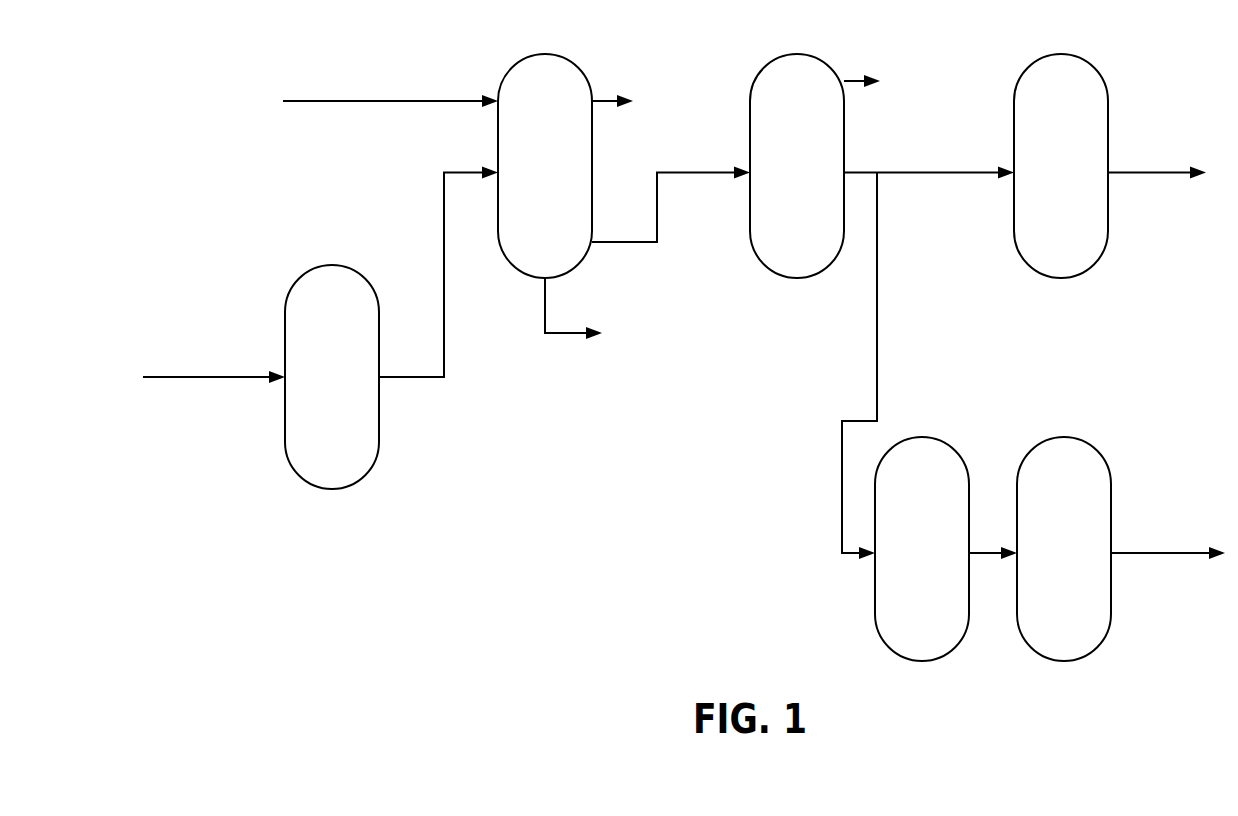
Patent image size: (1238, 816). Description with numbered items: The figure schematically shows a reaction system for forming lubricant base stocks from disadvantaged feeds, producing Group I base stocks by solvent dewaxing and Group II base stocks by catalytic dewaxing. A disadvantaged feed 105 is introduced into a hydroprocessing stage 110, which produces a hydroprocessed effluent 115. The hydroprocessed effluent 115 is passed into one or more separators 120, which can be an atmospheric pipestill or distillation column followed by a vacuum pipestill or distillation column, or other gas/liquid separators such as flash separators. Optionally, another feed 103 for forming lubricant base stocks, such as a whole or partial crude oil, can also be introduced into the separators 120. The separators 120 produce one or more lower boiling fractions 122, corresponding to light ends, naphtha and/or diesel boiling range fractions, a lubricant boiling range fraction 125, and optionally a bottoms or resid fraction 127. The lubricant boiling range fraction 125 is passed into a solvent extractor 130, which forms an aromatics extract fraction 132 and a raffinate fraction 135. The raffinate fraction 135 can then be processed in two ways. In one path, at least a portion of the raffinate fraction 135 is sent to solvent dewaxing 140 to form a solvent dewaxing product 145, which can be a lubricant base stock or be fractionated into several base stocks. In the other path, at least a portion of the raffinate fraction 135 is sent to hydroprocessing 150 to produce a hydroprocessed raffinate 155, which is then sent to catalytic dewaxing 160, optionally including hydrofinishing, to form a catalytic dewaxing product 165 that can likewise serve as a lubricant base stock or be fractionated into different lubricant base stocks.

The another feed 103 is at (392, 100).
The disadvantaged feed 105 is at (210, 376).
The hydroprocessing stage 110 is at (313, 394).
The hydroprocessed effluent 115 is at (444, 203).
The separators 120 is at (526, 183).
The lower boiling fractions 122 is at (610, 97).
The lubricant boiling range fraction 125 is at (623, 242).
The bottoms or resid fraction 127 is at (572, 337).
The solvent extractor 130 is at (778, 183).
The aromatics extract fraction 132 is at (857, 78).
The raffinate fraction 135 is at (943, 170).
The solvent dewaxing 140 is at (1042, 183).
The solvent dewaxing product 145 is at (1143, 170).
The hydroprocessing 150 is at (903, 564).
The hydroprocessed raffinate 155 is at (985, 552).
The catalytic dewaxing 160 is at (1045, 564).
The catalytic dewaxing product 165 is at (1145, 553).